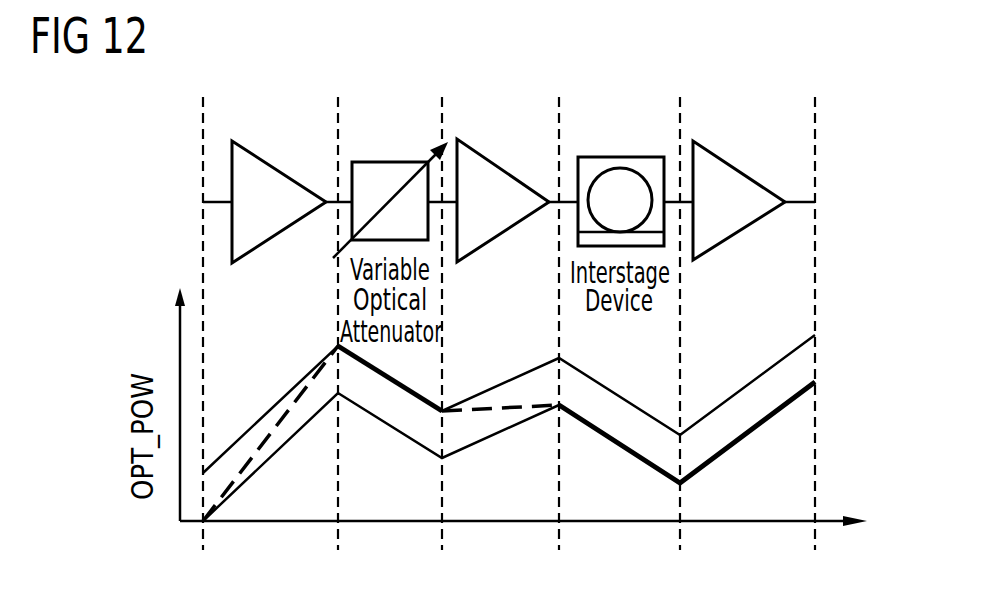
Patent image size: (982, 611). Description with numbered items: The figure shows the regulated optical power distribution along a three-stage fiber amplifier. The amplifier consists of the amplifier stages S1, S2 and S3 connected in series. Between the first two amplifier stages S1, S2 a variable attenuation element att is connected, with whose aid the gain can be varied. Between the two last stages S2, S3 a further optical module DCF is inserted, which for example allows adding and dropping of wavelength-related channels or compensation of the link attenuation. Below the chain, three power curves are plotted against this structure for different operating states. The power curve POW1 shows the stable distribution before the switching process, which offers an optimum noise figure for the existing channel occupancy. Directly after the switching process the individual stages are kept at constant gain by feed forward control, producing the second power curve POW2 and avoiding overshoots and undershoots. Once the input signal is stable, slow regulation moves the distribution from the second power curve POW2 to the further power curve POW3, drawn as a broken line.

The first amplifier stage S1 is at (279, 202).
The second amplifier stage S2 is at (503, 200).
The third amplifier stage S3 is at (739, 200).
The variable attenuation element att is at (390, 200).
The further optical module DCF is at (621, 201).
The first power curve POW1 is at (765, 372).
The second power curve POW2 is at (475, 447).
The further power curve POW3 is at (267, 440).